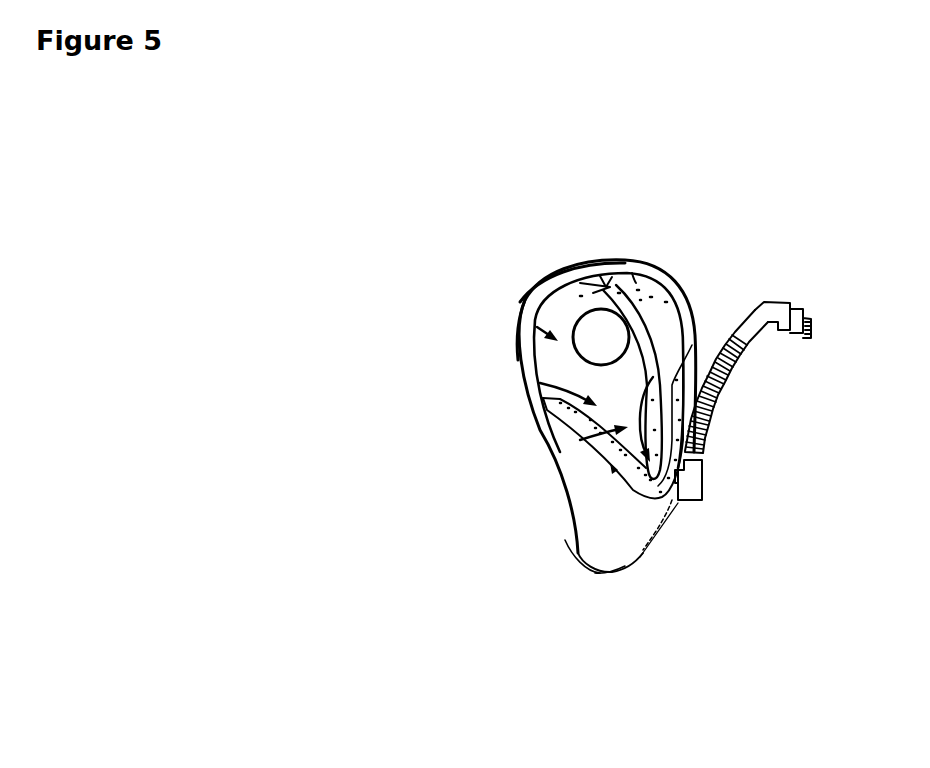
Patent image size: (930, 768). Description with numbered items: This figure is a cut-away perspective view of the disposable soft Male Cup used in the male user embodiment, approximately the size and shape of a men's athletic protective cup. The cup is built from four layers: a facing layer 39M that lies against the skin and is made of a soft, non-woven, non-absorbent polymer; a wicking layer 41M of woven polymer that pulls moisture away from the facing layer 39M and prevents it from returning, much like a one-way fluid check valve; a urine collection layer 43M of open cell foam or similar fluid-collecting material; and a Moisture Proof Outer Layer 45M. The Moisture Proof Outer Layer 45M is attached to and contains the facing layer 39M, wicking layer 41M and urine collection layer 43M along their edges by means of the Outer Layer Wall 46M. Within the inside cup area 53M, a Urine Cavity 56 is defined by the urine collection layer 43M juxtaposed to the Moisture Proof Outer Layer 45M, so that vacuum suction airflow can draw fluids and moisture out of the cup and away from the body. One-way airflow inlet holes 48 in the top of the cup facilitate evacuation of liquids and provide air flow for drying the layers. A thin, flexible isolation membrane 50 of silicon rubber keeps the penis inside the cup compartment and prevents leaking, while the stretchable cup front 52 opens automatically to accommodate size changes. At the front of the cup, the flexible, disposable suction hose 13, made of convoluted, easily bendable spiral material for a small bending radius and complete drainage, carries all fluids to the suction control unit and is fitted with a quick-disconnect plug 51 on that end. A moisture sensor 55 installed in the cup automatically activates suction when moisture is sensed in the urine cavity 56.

The suction hose 13 is at (752, 359).
The quick-disconnect plug 51 is at (806, 302).
The moisture sensor 55 is at (680, 505).
The one-way airflow inlet holes 48 is at (640, 264).
The isolation membrane 50 is at (523, 318).
The cup front 52 is at (565, 272).
The urine cavity 56 is at (537, 382).
The facing layer 39M is at (520, 373).
The wicking layer 41M is at (525, 410).
The inside cup area 53M is at (580, 440).
The urine collection layer 43M is at (560, 481).
The Moisture Proof Outer Layer 45M is at (604, 535).
The Outer Layer Wall 46M is at (605, 570).